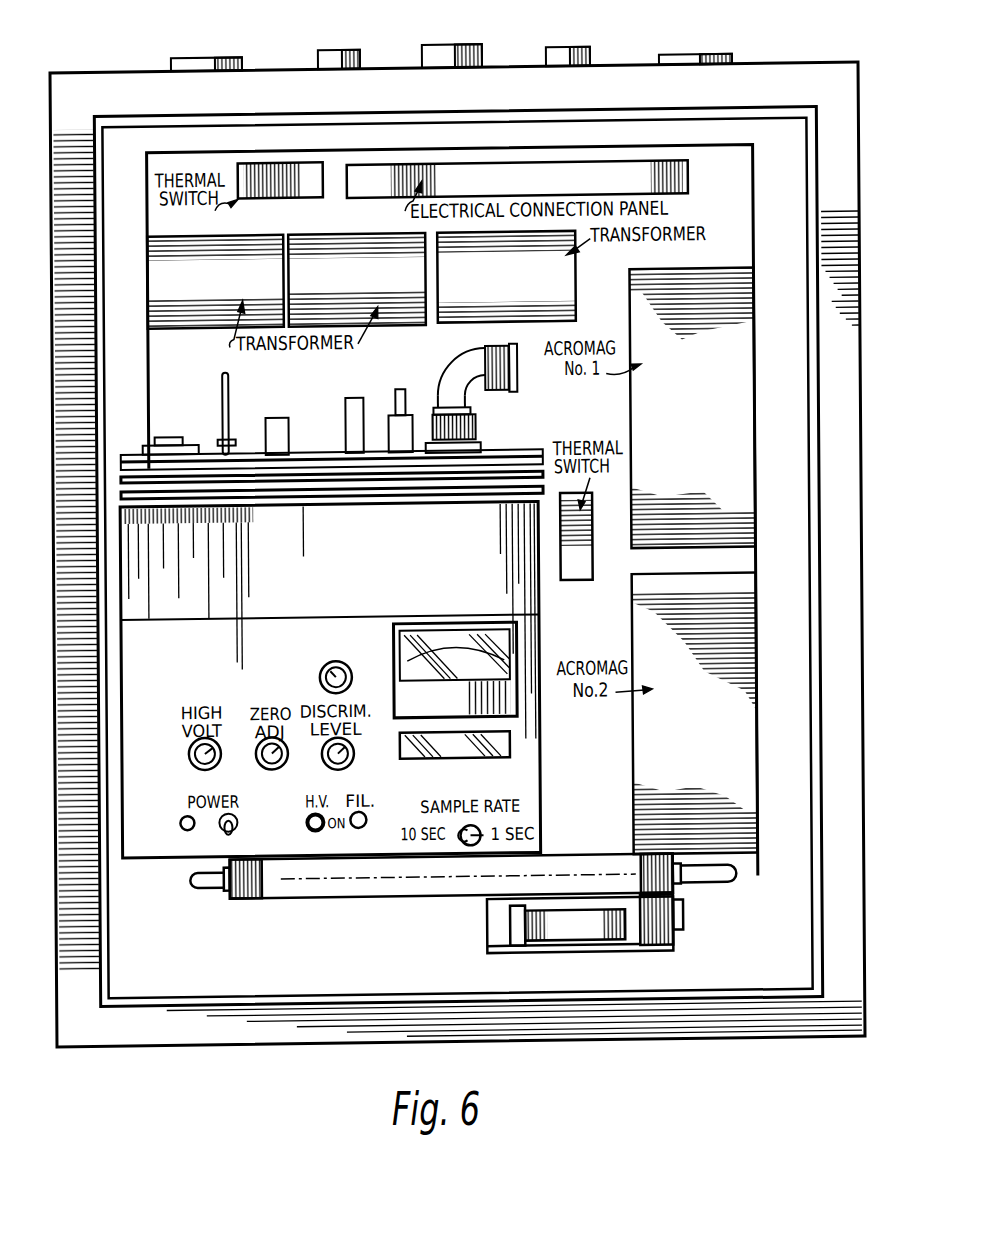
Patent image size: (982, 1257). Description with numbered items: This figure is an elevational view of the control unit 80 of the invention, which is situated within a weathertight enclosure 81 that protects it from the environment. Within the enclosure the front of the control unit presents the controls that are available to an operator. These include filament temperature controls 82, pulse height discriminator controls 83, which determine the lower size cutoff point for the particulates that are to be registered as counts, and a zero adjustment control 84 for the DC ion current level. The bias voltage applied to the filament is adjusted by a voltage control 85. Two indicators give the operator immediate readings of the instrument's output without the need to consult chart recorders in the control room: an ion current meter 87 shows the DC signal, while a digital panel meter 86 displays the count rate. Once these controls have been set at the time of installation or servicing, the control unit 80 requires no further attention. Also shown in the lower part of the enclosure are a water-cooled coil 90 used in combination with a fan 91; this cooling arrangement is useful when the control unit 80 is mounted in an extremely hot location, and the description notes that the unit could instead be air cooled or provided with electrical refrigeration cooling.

The control unit 80 is at (384, 54).
The weathertight enclosure 81 is at (614, 74).
The filament temperature controls 82 is at (315, 681).
The pulse height discriminator controls 83 is at (349, 757).
The zero adjustment control 84 is at (276, 753).
The voltage control 85 is at (216, 757).
The digital panel meter 86 is at (490, 766).
The ion current meter 87 is at (400, 695).
The water-cooled coil 90 is at (282, 893).
The fan 91 is at (491, 922).